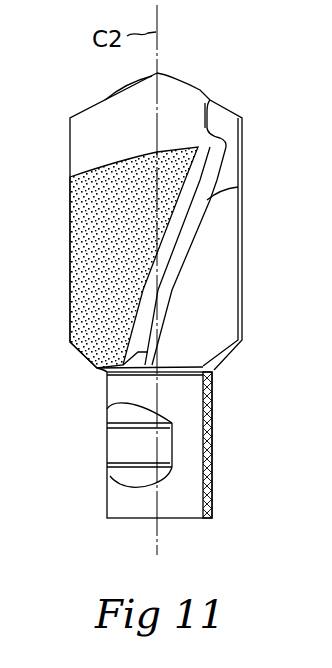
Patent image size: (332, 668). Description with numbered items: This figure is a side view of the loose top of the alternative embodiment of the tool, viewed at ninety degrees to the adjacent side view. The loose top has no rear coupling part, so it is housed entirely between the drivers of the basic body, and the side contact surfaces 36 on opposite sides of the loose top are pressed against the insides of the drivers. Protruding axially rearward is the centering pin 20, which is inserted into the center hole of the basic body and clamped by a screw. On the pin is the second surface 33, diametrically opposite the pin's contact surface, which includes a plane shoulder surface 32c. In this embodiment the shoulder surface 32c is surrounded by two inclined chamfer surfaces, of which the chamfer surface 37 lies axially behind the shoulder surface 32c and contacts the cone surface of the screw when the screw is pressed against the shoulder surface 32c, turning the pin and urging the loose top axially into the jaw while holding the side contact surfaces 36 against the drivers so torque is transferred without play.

The centering pin 20 is at (227, 452).
The side contact surfaces 36 is at (127, 256).
The second surface 33 is at (196, 508).
The shoulder surface 32c is at (116, 444).
The chamfer surface 37 is at (120, 484).